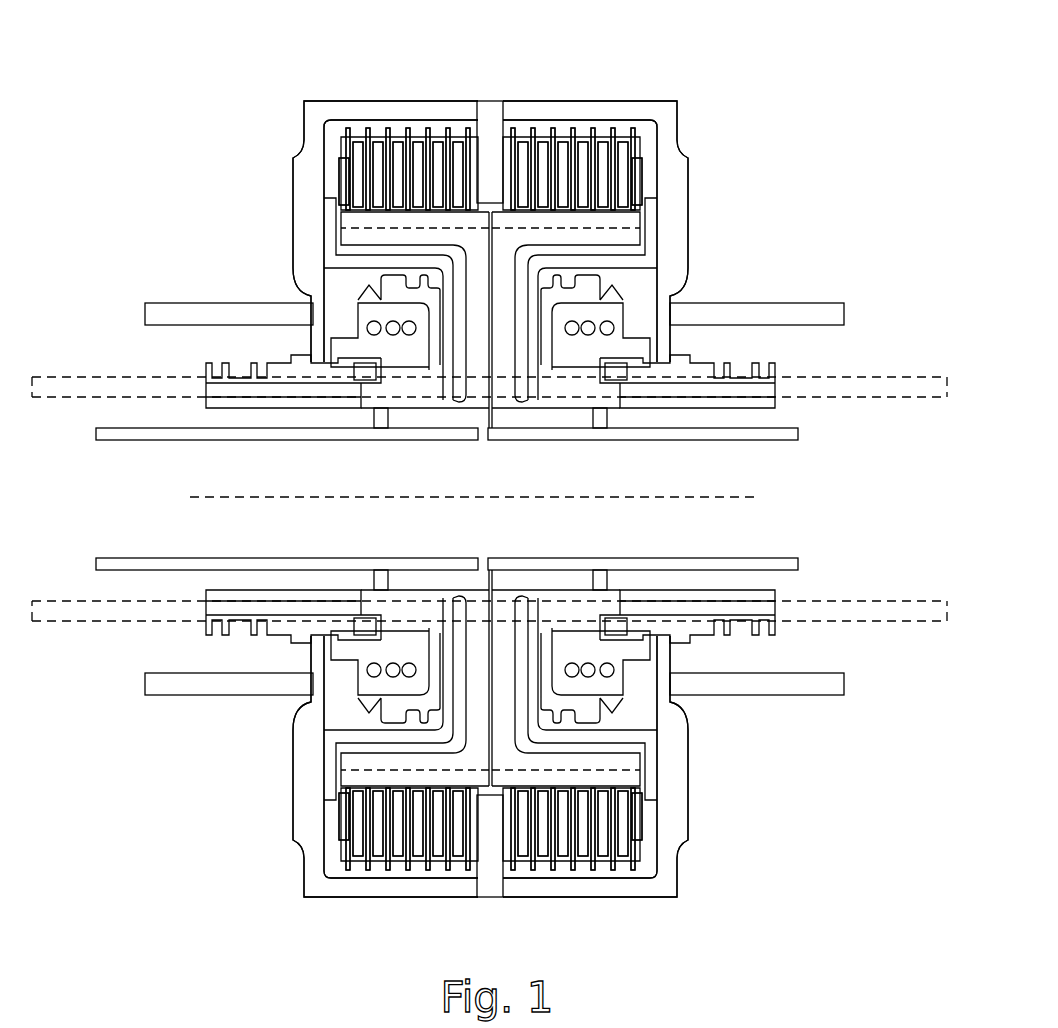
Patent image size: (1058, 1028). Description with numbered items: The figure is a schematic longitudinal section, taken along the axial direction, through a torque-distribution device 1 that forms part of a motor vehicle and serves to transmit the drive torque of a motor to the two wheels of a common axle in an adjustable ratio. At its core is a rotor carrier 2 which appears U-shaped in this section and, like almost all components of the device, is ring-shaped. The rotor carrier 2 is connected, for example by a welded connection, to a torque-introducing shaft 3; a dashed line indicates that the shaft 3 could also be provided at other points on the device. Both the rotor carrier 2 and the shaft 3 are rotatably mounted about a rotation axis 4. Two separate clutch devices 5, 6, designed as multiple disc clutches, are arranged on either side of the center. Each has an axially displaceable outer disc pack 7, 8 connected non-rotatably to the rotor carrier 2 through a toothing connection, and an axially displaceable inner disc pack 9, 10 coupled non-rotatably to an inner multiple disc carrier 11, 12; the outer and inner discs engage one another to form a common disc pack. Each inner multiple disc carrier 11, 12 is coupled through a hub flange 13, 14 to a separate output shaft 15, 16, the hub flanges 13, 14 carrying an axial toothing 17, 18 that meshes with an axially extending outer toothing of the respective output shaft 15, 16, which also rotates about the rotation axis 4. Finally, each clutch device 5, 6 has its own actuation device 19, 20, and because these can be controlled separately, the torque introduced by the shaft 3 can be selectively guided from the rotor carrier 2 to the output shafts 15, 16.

The torque-distribution device 1 is at (754, 826).
The rotor carrier 2 is at (322, 101).
The shaft 3 is at (160, 303).
The rotation axis 4 is at (762, 497).
The clutch device 5 is at (280, 108).
The clutch device 6 is at (692, 98).
The outer disc pack 7 is at (368, 135).
The outer disc pack 8 is at (530, 132).
The inner disc pack 9 is at (398, 140).
The inner disc pack 10 is at (560, 137).
The inner multiple disc carrier 11 is at (343, 223).
The inner multiple disc carrier 12 is at (632, 227).
The hub flange 13 is at (477, 360).
The hub flange 14 is at (503, 360).
The output shaft 15 is at (177, 440).
The output shaft 16 is at (773, 440).
The axial toothing 17 is at (380, 440).
The axial toothing 18 is at (590, 440).
The actuation device 19 is at (280, 271).
The actuation device 20 is at (699, 281).